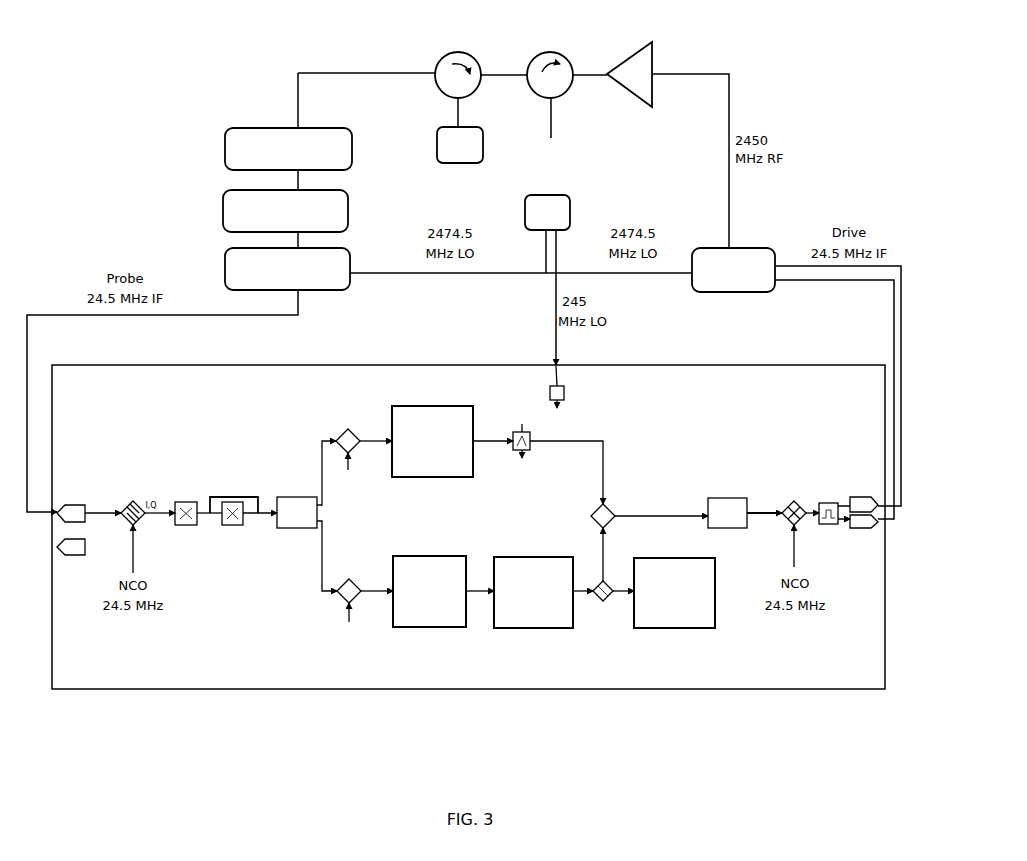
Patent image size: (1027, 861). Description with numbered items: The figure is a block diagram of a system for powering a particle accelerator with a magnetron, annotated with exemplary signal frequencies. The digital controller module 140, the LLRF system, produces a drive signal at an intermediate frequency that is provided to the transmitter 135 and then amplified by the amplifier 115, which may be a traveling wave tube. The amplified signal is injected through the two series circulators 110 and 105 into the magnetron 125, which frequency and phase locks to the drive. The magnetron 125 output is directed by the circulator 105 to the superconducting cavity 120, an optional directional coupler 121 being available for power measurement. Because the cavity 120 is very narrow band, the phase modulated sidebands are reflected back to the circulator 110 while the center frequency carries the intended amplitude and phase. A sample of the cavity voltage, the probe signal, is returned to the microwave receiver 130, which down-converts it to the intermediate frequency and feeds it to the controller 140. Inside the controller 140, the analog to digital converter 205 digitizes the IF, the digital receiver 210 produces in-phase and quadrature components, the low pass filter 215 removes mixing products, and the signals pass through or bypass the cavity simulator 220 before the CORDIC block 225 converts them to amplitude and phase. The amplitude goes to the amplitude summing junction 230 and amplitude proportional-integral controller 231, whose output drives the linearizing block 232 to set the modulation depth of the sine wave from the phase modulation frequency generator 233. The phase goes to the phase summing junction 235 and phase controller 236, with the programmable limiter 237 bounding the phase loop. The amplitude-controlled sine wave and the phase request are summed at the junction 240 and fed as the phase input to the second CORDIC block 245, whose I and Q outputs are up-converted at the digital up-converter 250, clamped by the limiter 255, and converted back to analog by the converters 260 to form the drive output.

The circulator 105 is at (446, 60).
The circulator 110 is at (530, 62).
The amplifier 115 is at (626, 56).
The cavity 120 is at (285, 211).
The directional coupler 121 is at (288, 149).
The magnetron 125 is at (460, 145).
The microwave receiver 130 is at (397, 242).
The transmitter 135 is at (733, 270).
The digital controller module 140 is at (468, 527).
The analog to digital converter 205 is at (60, 503).
The digital receiver 210 is at (99, 507).
The low pass filter 215 is at (183, 530).
The cavity simulator 220 is at (231, 530).
The CORDIC block 225 is at (274, 495).
The amplitude summing junction 230 is at (351, 613).
The amplitude proportional-integral feedback controller 231 is at (429, 591).
The phase modulation to amplitude modulation linearizing block 232 is at (533, 592).
The phase modulation frequency generator 233 is at (674, 593).
The phase summing junction 235 is at (350, 463).
The phase proportional-integral feedback controller 236 is at (432, 441).
The programmable limiter 237 is at (534, 437).
The summing junction 240 is at (612, 502).
The second CORDIC block 245 is at (712, 495).
The digital up-converter 250 is at (797, 500).
The limiter 255 is at (828, 500).
The digital to analog converter 260 is at (859, 533).